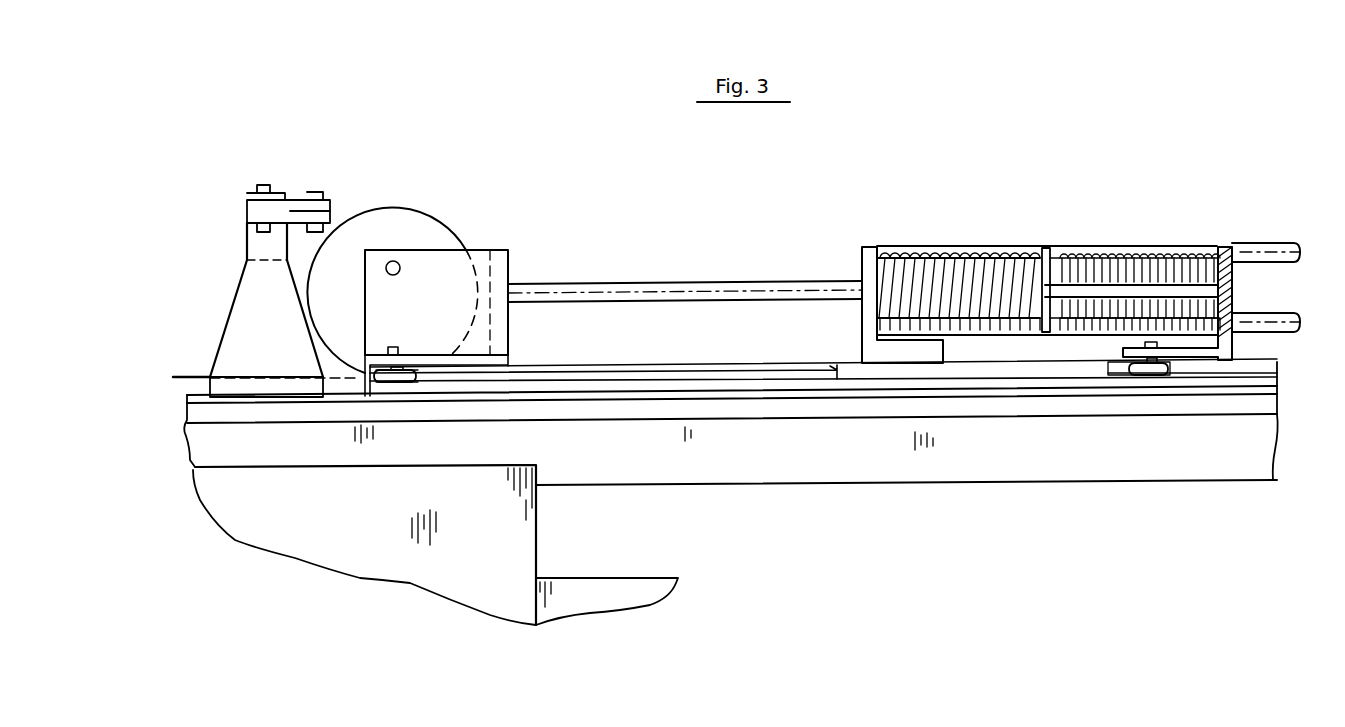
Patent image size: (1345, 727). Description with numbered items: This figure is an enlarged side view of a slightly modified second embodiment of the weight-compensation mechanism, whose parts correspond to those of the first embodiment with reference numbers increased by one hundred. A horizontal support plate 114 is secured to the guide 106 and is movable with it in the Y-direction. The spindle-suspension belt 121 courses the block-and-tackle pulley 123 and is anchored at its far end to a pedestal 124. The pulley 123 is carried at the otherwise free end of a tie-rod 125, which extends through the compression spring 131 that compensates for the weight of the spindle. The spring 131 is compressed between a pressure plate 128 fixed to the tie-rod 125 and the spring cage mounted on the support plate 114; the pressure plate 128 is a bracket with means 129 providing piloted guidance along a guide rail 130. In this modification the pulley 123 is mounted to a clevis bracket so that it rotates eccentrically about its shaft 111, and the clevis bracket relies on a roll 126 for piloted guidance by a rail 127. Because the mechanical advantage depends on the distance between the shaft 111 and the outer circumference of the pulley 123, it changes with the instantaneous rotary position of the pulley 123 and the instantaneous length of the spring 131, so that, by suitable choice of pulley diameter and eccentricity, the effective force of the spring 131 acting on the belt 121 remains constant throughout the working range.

The Y-axis guide 106 is at (320, 530).
The shaft 111 is at (403, 267).
The horizontal support plate 114 is at (950, 460).
The belt 121 is at (188, 374).
The pulley 123 is at (433, 232).
The pedestal 124 is at (248, 302).
The tie-rod 125 is at (657, 291).
The roll 126 is at (397, 383).
The rail 127 is at (628, 378).
The pressure plate 128 is at (1222, 248).
The piloted guidance means 129 is at (1147, 376).
The guide rail 130 is at (1275, 368).
The compression spring 131 is at (982, 258).